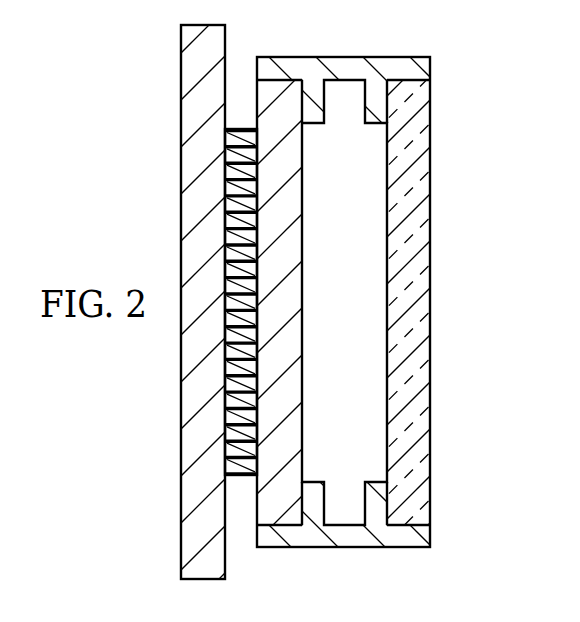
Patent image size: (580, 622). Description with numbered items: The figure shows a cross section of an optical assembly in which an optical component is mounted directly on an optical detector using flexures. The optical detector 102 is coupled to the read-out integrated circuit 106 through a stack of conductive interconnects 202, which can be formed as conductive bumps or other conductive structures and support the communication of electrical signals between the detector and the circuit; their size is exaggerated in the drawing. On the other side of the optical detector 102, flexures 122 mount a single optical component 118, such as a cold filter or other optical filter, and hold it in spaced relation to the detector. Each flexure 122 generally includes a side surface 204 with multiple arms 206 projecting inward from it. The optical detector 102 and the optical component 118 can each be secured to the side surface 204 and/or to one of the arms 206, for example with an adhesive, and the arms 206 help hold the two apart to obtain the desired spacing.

The optical detector 102 is at (294, 334).
The read-out integrated circuit 106 is at (190, 485).
The optical component 118 is at (423, 328).
The flexure 122 is at (344, 67).
The conductive interconnect 202 is at (232, 140).
The side surface 204 is at (447, 536).
The arm 206 is at (315, 463).